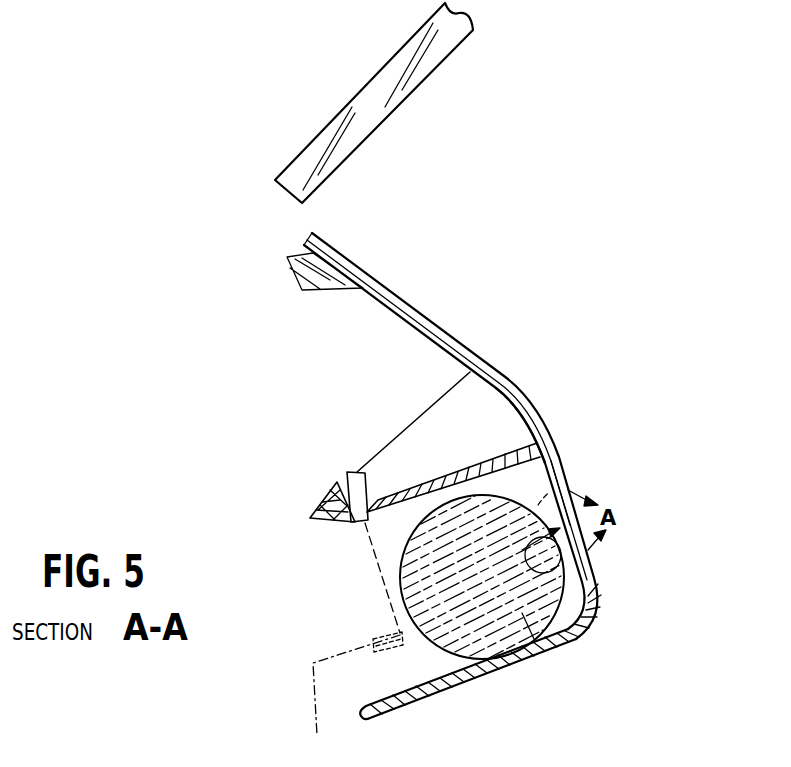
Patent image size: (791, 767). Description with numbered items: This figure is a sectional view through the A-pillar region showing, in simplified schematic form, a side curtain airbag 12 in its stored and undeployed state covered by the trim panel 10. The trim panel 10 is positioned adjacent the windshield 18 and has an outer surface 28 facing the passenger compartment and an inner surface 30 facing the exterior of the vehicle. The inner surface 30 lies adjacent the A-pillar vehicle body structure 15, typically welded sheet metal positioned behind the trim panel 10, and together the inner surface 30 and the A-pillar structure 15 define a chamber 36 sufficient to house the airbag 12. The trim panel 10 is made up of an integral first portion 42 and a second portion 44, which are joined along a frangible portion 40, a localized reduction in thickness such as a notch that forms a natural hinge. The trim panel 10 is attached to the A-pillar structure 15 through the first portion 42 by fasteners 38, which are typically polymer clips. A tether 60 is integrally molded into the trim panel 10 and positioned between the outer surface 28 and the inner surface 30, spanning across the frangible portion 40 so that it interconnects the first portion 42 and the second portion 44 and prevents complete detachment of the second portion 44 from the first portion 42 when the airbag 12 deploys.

The trim panel 10 is at (565, 316).
The side curtain airbag 12 is at (568, 650).
The A-pillar vehicle body structure 15 is at (372, 585).
The windshield 18 is at (433, 43).
The outer surface 28 is at (447, 327).
The inner surface 30 is at (423, 334).
The chamber 36 is at (385, 530).
The fasteners 38 is at (303, 490).
The frangible portion 40 is at (545, 573).
The first portion 42 is at (541, 396).
The second portion 44 is at (614, 608).
The tether 60 is at (562, 476).